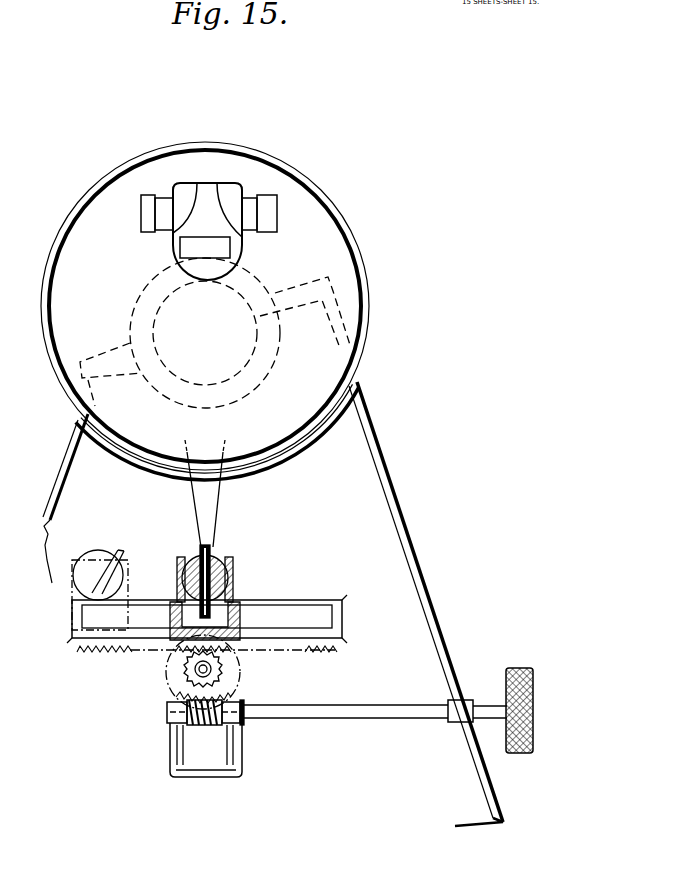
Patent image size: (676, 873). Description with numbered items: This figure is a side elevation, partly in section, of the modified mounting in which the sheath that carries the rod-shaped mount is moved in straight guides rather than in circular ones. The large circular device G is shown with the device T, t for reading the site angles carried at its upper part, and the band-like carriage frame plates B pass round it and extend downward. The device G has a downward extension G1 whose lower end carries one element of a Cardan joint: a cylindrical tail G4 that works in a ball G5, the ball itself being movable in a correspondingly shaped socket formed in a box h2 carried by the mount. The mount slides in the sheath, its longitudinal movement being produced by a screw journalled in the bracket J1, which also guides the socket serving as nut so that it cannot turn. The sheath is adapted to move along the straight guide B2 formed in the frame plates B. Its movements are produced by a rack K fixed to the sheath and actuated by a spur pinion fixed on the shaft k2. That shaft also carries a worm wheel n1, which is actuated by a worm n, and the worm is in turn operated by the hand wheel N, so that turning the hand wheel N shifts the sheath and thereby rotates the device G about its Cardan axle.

The device G is at (330, 360).
The carriage frame plates B is at (362, 460).
The device for reading the site angles T is at (182, 231).
The device for reading the site angles t is at (227, 253).
The extension G1 is at (210, 503).
The cylindrical tail G4 is at (212, 558).
The ball G5 is at (228, 581).
The box h2 is at (177, 582).
The bracket J1 is at (173, 640).
The straight guide B2 is at (303, 630).
The rack K is at (312, 652).
The shaft k2 is at (190, 673).
The worm wheel n1 is at (228, 684).
The worm n is at (205, 727).
The hand wheel N is at (507, 670).